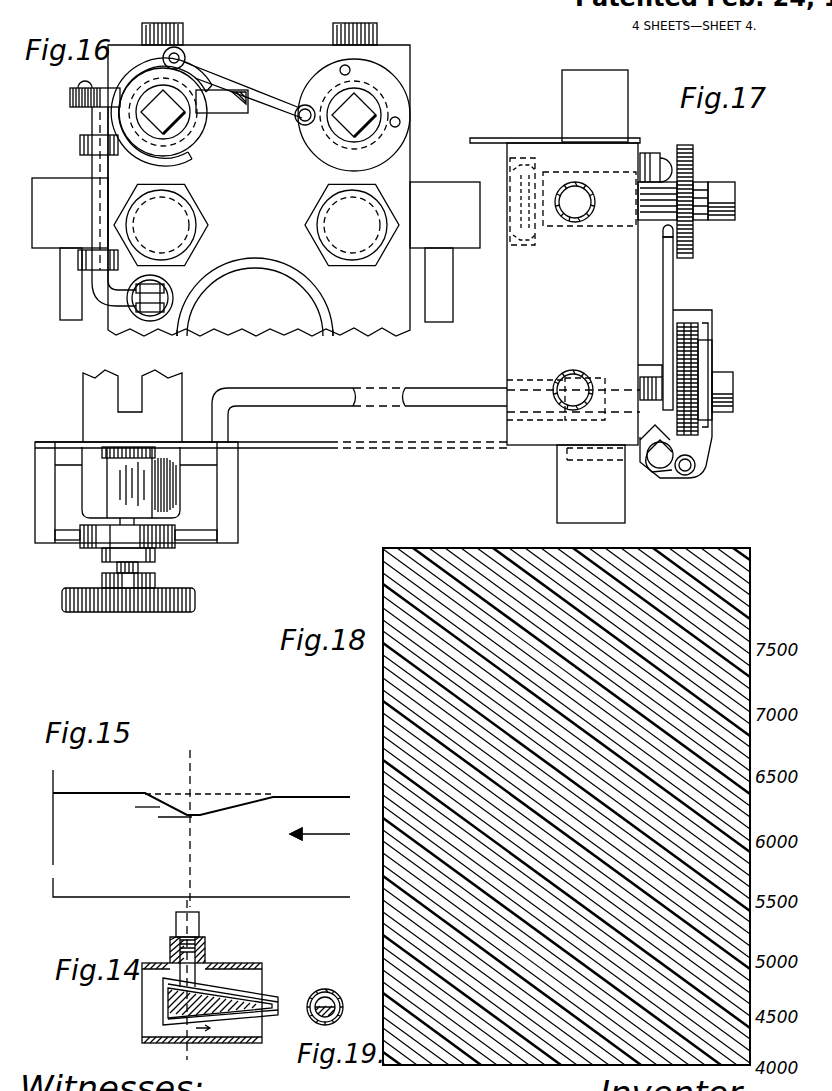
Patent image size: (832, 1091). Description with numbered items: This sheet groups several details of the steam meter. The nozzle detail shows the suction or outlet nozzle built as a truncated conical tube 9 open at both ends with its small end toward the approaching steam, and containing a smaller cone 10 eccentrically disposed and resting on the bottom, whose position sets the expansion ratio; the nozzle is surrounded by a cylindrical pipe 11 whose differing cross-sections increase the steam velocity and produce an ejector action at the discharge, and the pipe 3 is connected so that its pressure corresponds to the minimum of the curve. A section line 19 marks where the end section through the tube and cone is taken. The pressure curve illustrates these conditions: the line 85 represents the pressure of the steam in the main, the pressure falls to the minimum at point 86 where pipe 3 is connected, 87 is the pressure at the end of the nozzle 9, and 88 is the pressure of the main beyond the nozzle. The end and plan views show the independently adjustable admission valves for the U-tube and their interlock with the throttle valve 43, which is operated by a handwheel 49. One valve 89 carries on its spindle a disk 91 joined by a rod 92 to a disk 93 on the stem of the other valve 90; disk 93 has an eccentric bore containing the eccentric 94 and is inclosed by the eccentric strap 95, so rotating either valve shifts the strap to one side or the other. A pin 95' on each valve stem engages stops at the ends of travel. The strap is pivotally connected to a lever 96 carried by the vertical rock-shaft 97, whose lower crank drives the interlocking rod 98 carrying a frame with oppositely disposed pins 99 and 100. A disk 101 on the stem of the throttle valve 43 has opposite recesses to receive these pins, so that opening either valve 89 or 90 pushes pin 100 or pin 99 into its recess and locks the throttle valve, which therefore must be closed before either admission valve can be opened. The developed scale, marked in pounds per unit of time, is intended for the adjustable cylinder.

In FIG. 14, the pipe 3 is at (199, 922).
In FIG. 14, the truncated conical tube 9 is at (273, 995).
In FIG. 14, the cone 10 is at (166, 1006).
In FIG. 14, the cylindrical pipe 11 is at (247, 1043).
In FIG. 14, the section line 19 is at (212, 1003).
In FIG. 16, the throttling valve 43 is at (118, 488).
In FIG. 16, the handwheel 49 is at (195, 600).
In FIG. 15, the line 85 is at (201, 792).
In FIG. 15, the minimum pressure point 86 is at (178, 818).
In FIG. 15, the nozzle end pressure 87 is at (143, 808).
In FIG. 15, the main pressure beyond nozzle 88 is at (145, 795).
In FIG. 16, the independently adjustable valve 89 is at (354, 115).
In FIG. 17, the independently adjustable valve 89 is at (735, 198).
In FIG. 16, the independently adjustable valve 90 is at (163, 112).
In FIG. 17, the independently adjustable valve 90 is at (733, 390).
In FIG. 16, the disk 91 is at (380, 78).
In FIG. 17, the disk 91 is at (693, 245).
In FIG. 16, the rod 92 is at (262, 78).
In FIG. 17, the rod 92 is at (673, 292).
In FIG. 16, the disk 93 is at (182, 55).
In FIG. 17, the disk 93 is at (698, 332).
In FIG. 16, the eccentric 94 is at (200, 133).
In FIG. 16, the eccentric strap 95 is at (172, 87).
In FIG. 17, the eccentric strap 95 is at (700, 400).
In FIG. 16, the pin 95' is at (414, 113).
In FIG. 17, the pin 95' is at (660, 149).
In FIG. 16, the lever 96 is at (70, 100).
In FIG. 17, the lever 96 is at (665, 470).
In FIG. 16, the vertical rock-shaft 97 is at (92, 120).
In FIG. 16, the interlocking rod 98 is at (432, 388).
In FIG. 16, the pin 99 is at (62, 545).
In FIG. 16, the pin 100 is at (195, 548).
In FIG. 16, the disk 101 is at (175, 530).